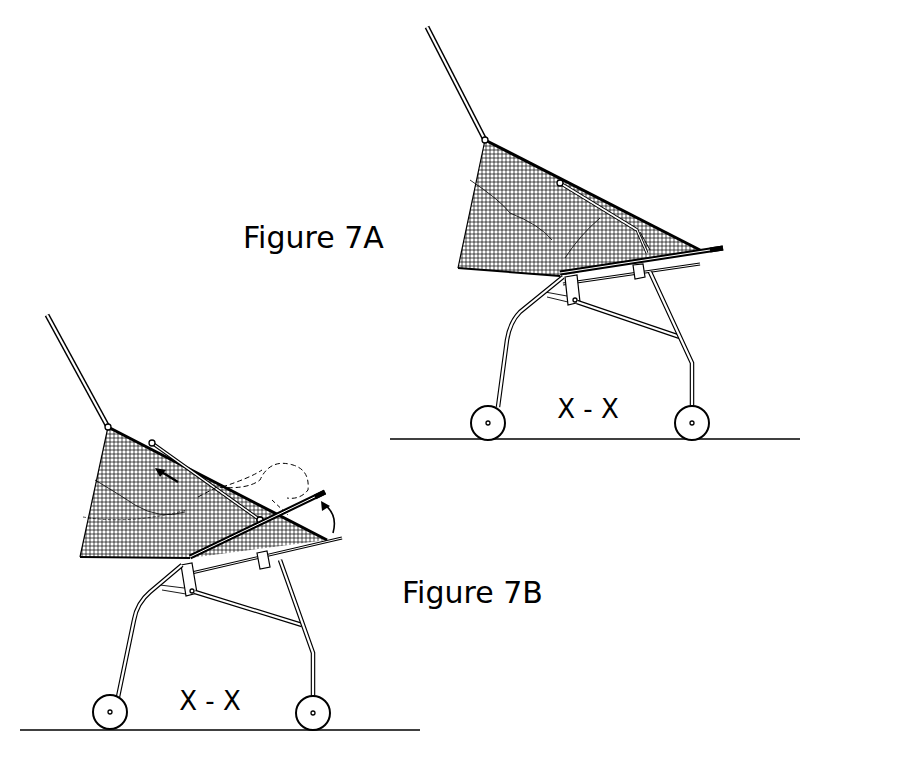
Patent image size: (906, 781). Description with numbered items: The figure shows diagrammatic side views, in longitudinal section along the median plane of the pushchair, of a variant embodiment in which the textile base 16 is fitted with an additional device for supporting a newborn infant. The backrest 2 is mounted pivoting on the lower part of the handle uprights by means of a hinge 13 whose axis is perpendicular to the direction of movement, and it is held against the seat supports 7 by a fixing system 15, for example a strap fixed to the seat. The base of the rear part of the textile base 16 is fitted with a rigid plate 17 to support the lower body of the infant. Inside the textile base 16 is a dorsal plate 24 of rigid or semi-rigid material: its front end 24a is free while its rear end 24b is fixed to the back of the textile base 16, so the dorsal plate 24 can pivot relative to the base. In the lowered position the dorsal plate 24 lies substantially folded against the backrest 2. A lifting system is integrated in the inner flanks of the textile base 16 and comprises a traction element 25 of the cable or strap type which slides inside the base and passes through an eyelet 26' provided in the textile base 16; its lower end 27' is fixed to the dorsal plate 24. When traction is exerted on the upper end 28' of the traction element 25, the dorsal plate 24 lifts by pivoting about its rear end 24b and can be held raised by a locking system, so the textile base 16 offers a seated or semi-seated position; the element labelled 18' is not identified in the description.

In FIG. 7A, the backrest 2 is at (698, 267).
In FIG. 7B, the backrest 2 is at (345, 539).
In FIG. 7A, the seat support 7 is at (608, 292).
In FIG. 7B, the seat support 7 is at (230, 578).
In FIG. 7A, the hinge 13 is at (567, 290).
In FIG. 7B, the hinge 13 is at (183, 585).
In FIG. 7A, the fixing system 15 is at (640, 280).
In FIG. 7B, the fixing system 15 is at (262, 568).
In FIG. 7A, the textile base 16 is at (512, 214).
In FIG. 7B, the textile base 16 is at (135, 505).
In FIG. 7A, the rigid plate 17 is at (472, 281).
In FIG. 7B, the rigid plate 17 is at (97, 564).
In FIG. 7A, the canopy support rod 18' is at (563, 138).
In FIG. 7B, the canopy support rod 18' is at (187, 427).
In FIG. 7A, the dorsal plate 24 is at (700, 244).
In FIG. 7B, the dorsal plate 24 is at (318, 490).
In FIG. 7A, the front end of the dorsal plate 24a is at (718, 247).
In FIG. 7B, the front end of the dorsal plate 24a is at (330, 492).
In FIG. 7A, the rear end of the dorsal plate 24b is at (600, 218).
In FIG. 7B, the rear end of the dorsal plate 24b is at (240, 478).
In FIG. 7B, the traction element 25 is at (226, 485).
In FIG. 7A, the eyelet 26' is at (664, 217).
In FIG. 7B, the eyelet 26' is at (253, 480).
In FIG. 7A, the lower end of the traction element 27' is at (663, 230).
In FIG. 7B, the lower end of the traction element 27' is at (295, 513).
In FIG. 7A, the upper end of the traction element 28' is at (597, 179).
In FIG. 7B, the upper end of the traction element 28' is at (206, 459).